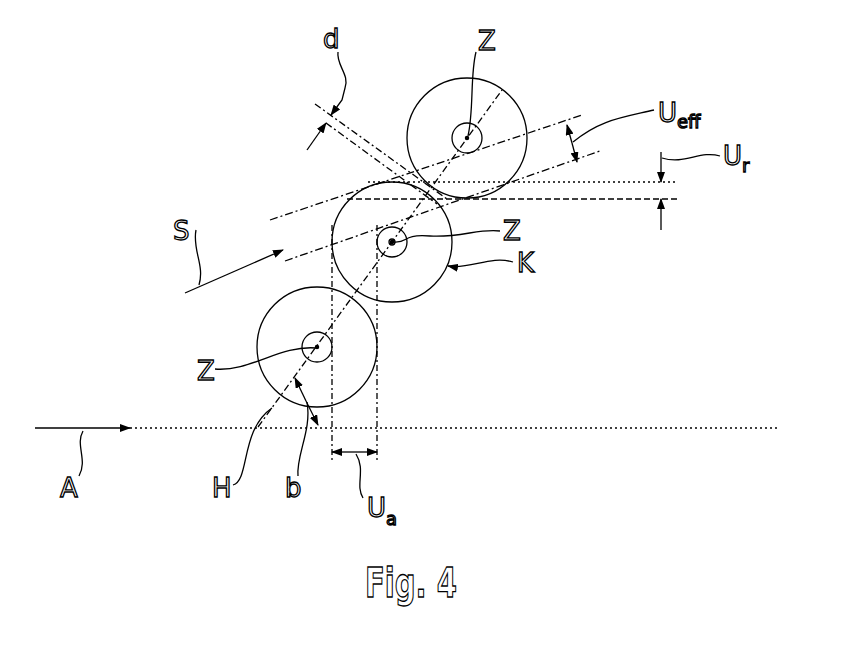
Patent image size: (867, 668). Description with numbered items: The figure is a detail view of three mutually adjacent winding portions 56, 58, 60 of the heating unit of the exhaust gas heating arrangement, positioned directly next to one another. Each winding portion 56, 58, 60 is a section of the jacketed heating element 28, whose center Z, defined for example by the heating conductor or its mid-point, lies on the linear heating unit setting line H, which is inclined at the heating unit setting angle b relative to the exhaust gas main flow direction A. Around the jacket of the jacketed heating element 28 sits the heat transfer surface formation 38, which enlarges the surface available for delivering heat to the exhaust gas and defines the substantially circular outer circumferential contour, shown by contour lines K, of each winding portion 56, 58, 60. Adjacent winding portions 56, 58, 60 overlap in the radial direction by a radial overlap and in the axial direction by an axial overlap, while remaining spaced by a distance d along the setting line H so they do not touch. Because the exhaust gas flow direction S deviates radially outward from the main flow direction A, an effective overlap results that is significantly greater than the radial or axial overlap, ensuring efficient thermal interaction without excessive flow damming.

The jacketed heating element 28 is at (390, 234).
The heat transfer surface formation 38 is at (433, 108).
The winding portion 56 is at (378, 352).
The winding portion 58 is at (438, 284).
The winding portion 60 is at (520, 97).